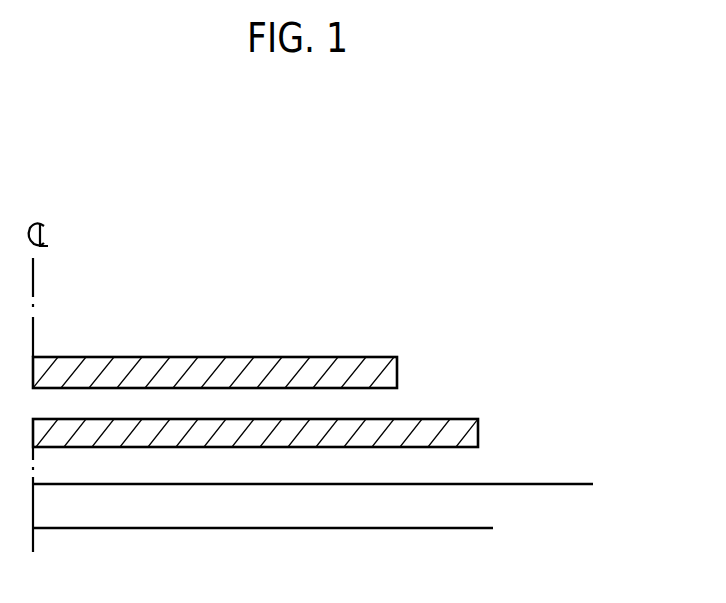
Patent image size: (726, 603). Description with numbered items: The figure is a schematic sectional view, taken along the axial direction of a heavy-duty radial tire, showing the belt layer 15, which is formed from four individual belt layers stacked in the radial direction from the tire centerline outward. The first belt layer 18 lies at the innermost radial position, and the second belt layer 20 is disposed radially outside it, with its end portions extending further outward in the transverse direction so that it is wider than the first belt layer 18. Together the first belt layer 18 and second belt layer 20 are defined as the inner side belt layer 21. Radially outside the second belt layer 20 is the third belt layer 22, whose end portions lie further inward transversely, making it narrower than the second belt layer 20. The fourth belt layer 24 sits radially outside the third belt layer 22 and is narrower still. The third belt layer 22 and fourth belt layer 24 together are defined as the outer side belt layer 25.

The belt layer 15 is at (297, 355).
The fourth belt layer 24 is at (180, 357).
The third belt layer 22 is at (120, 420).
The outer side belt layer 25 is at (297, 371).
The inner side belt layer 21 is at (351, 522).
The second belt layer 20 is at (367, 485).
The first belt layer 18 is at (249, 529).